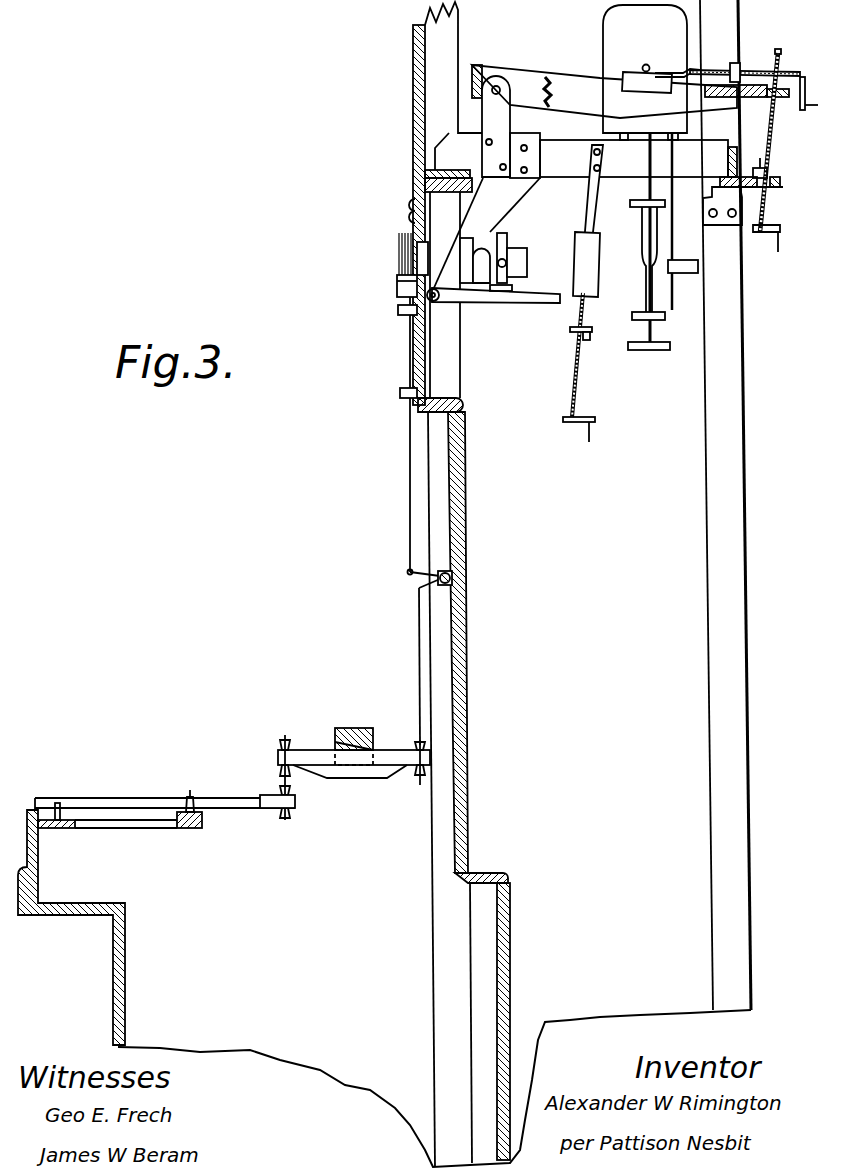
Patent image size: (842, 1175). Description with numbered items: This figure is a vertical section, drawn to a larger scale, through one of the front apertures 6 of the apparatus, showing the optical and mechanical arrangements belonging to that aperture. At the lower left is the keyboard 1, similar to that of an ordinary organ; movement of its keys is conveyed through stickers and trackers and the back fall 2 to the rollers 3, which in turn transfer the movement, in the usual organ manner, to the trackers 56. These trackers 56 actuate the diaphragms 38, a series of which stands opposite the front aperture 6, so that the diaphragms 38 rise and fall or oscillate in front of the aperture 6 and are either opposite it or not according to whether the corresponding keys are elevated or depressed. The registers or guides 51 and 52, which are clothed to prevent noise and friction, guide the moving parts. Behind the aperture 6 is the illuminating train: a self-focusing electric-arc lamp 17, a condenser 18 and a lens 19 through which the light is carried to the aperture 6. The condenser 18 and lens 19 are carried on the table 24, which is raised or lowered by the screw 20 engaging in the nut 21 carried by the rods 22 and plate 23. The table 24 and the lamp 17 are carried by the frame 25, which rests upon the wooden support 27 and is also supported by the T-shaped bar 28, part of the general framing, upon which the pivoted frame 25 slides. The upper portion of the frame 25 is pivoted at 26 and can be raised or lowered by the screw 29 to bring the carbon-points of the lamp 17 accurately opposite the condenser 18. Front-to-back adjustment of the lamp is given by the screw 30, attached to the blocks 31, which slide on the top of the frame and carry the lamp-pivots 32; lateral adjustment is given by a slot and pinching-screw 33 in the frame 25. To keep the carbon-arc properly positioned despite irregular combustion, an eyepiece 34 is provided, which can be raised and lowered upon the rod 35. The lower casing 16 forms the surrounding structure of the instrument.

The keyboard 1 is at (165, 804).
The back fall 2 is at (354, 774).
The rollers 3 is at (444, 585).
The front aperture 6 is at (434, 295).
The casing 16 is at (469, 789).
The self-focusing electric-arc lamp 17 is at (645, 177).
The condenser 18 is at (601, 264).
The lens 19 is at (501, 259).
The screw 20 is at (567, 367).
The nut 21 is at (570, 330).
The rods 22 is at (601, 219).
The plate 23 is at (590, 337).
The table 24 is at (493, 305).
The frame 25 is at (585, 177).
The pivot 26 is at (498, 86).
The wooden support 27 is at (437, 165).
The T-shaped bar 28 is at (768, 200).
The screw 29 is at (770, 136).
The screw 30 is at (754, 80).
The blocks 31 is at (655, 88).
The lamp-pivots 32 is at (650, 62).
The pinching-screw 33 is at (767, 178).
The eyepiece 34 is at (682, 273).
The rod 35 is at (686, 256).
The diaphragms 38 is at (398, 258).
The register 51 is at (398, 311).
The register 52 is at (400, 393).
The trackers 56 is at (405, 521).